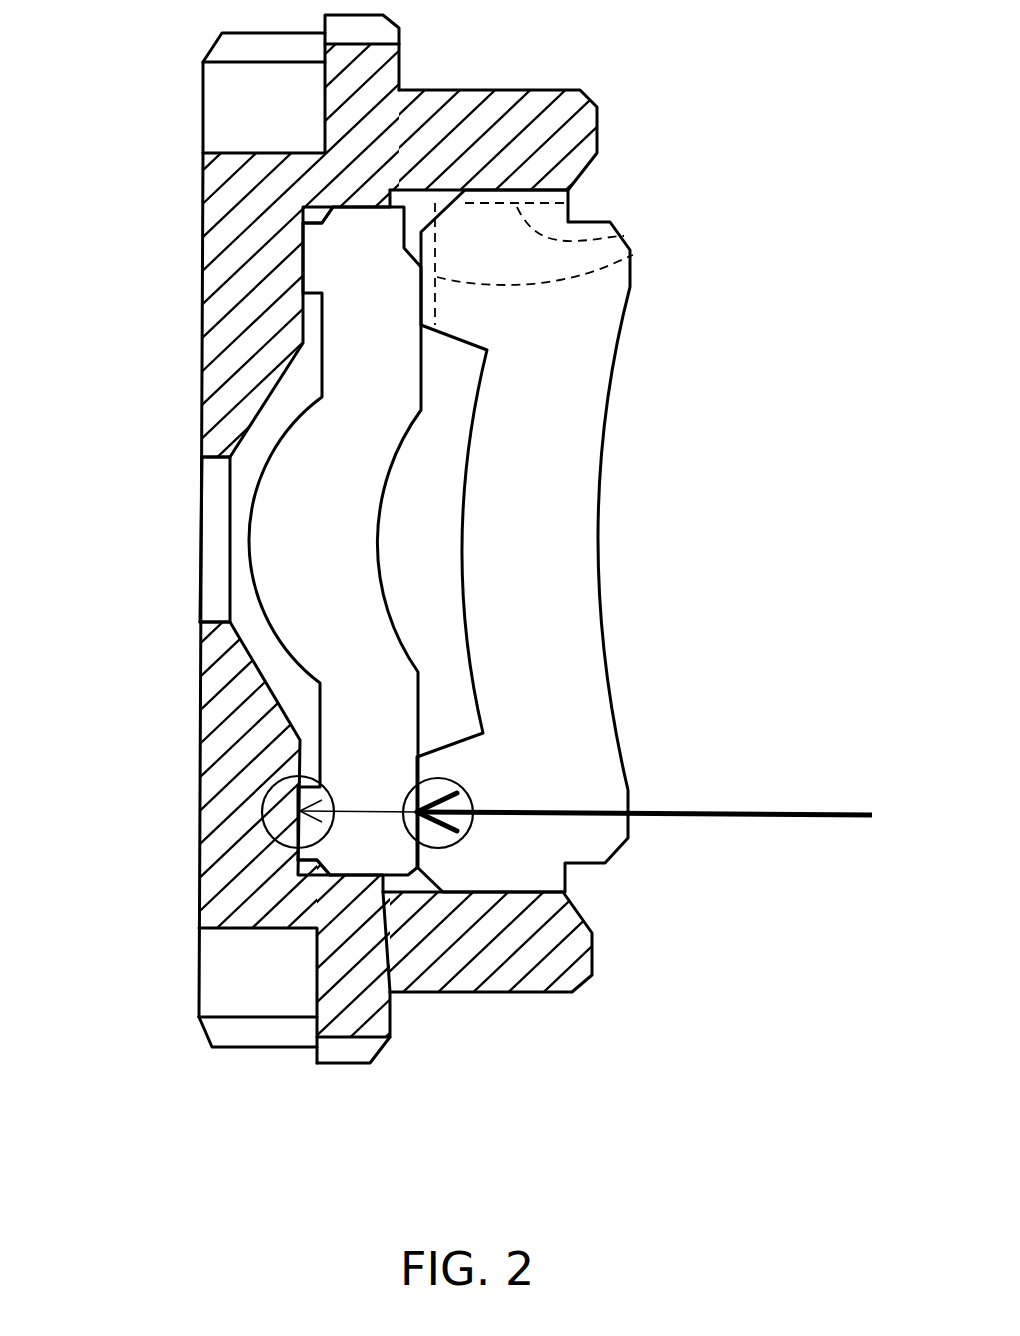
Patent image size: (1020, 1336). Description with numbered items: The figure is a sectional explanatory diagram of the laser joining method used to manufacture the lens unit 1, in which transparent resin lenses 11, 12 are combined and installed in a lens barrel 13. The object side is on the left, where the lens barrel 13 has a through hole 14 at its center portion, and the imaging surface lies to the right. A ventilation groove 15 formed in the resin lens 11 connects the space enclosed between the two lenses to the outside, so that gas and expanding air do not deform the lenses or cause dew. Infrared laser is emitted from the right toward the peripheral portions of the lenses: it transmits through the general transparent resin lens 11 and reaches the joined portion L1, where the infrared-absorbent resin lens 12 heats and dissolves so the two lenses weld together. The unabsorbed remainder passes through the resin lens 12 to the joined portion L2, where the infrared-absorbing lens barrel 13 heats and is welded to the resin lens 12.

The lens unit 1 is at (135, 200).
The resin lens 11 is at (557, 365).
The resin lens 12 is at (360, 453).
The lens barrel 13 is at (510, 127).
The through hole 14 is at (213, 617).
The ventilation groove 15 is at (633, 262).
The joined portion L1 is at (455, 845).
The joined portion L2 is at (262, 811).